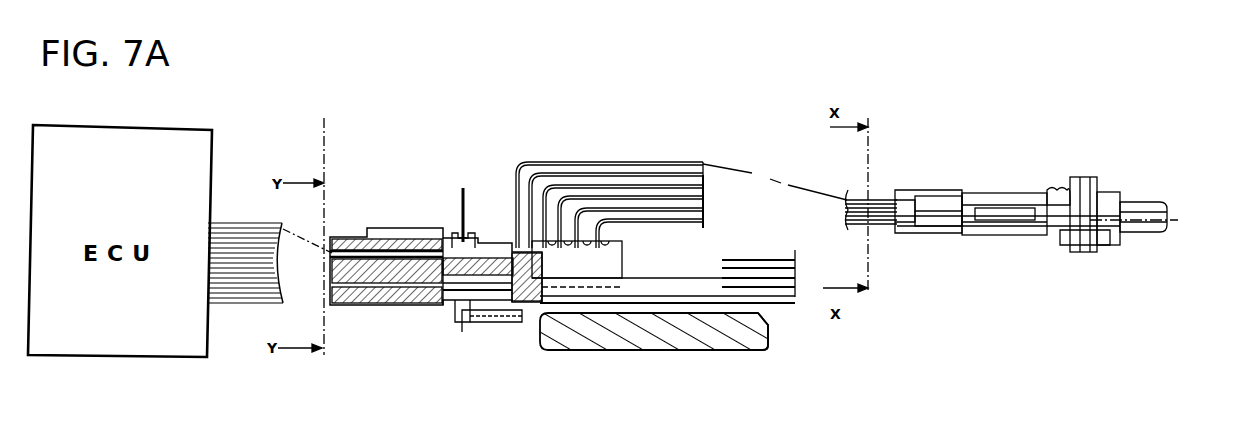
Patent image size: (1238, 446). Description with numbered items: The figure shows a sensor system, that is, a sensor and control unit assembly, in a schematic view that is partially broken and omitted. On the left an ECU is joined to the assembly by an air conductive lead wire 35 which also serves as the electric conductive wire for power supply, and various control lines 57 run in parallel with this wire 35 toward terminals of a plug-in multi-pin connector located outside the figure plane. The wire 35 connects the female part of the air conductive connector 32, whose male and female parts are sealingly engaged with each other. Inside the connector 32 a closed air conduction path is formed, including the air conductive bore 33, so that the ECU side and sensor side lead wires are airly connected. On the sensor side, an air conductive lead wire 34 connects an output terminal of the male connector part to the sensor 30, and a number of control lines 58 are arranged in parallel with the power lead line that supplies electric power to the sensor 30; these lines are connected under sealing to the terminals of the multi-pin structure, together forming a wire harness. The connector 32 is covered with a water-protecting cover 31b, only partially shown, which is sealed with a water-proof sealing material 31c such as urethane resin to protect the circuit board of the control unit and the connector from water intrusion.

The sensor 30 is at (962, 244).
The water-protecting cover 31b is at (705, 352).
The water-proof sealing material 31c is at (767, 332).
The air conductive connector 32 is at (446, 205).
The air conductive bore 33 is at (450, 296).
The air conductive lead wire 34 is at (523, 160).
The air conductive lead wire 35 is at (237, 222).
The control lines 57 is at (287, 246).
The control lines 58 is at (707, 177).